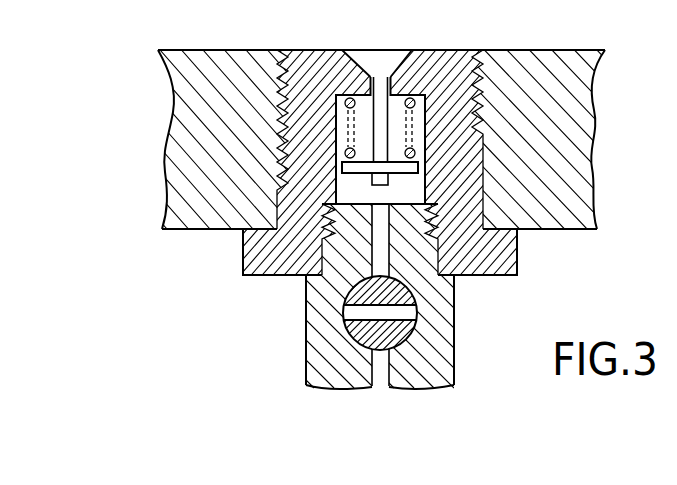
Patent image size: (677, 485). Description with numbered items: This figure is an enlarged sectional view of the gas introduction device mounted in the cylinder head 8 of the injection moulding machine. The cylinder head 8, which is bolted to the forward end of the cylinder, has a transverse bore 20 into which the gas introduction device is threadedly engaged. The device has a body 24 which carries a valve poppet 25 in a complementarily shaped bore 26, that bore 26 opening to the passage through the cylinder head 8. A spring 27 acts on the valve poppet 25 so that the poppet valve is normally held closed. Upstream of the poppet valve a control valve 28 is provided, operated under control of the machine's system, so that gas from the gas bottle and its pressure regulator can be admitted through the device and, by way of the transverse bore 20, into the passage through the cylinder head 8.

The cylinder head 8 is at (594, 141).
The transverse bore 20 is at (487, 183).
The body 24 is at (306, 235).
The valve poppet 25 is at (367, 58).
The complementarily shaped bore 26 is at (347, 65).
The spring 27 is at (428, 92).
The control valve 28 is at (405, 328).